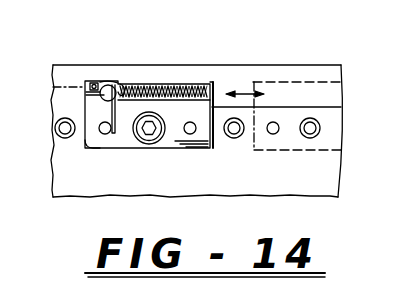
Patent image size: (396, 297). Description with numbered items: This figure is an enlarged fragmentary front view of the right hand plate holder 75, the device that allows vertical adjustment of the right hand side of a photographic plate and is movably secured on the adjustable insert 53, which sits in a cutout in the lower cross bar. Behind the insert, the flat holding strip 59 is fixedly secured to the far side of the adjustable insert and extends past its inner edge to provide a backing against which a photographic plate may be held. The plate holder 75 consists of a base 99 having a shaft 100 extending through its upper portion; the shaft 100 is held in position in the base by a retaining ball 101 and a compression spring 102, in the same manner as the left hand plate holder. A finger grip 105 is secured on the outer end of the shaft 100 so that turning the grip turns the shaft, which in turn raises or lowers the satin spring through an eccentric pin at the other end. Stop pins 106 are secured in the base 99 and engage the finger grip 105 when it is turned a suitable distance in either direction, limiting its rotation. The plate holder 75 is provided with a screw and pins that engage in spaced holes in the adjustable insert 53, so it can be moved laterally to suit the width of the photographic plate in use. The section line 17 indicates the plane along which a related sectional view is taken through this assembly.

The section line 17 is at (153, 71).
The adjustable insert 53 is at (285, 187).
The flat holding strip 59 is at (236, 75).
The right hand plate holder 75 is at (180, 153).
The base 99 is at (97, 152).
The shaft 100 is at (101, 93).
The retaining ball 101 is at (112, 78).
The compression spring 102 is at (180, 22).
The finger grip 105 is at (112, 112).
The stop pins 106 is at (88, 80).